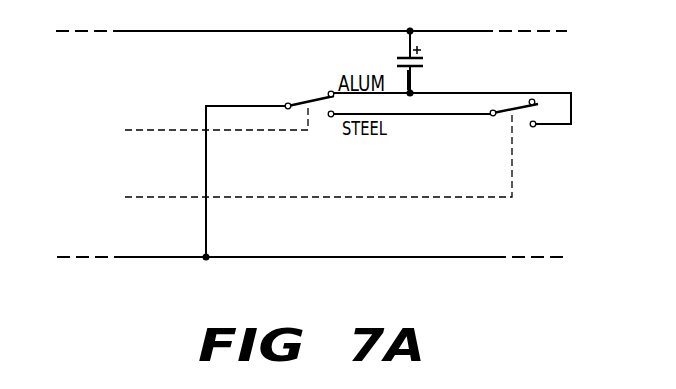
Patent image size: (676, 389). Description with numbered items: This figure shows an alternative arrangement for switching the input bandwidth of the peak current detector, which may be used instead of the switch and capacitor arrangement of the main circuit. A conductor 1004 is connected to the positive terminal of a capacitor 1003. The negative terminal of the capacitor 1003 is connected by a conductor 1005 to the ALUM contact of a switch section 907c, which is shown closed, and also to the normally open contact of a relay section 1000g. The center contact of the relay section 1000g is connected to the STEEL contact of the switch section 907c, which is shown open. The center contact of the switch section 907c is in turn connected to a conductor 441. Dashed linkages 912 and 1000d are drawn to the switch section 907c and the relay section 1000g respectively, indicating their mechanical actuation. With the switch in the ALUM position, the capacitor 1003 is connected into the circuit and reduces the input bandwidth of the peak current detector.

The conductor 1004 is at (319, 28).
The conductor 441 is at (321, 262).
The capacitor 1003 is at (430, 61).
The conductor 1005 is at (406, 80).
The switch section 907c is at (317, 93).
The relay section 1000g is at (502, 117).
The control linkage (dashed) 912 is at (183, 128).
The control linkage (dashed) 1000d is at (193, 195).